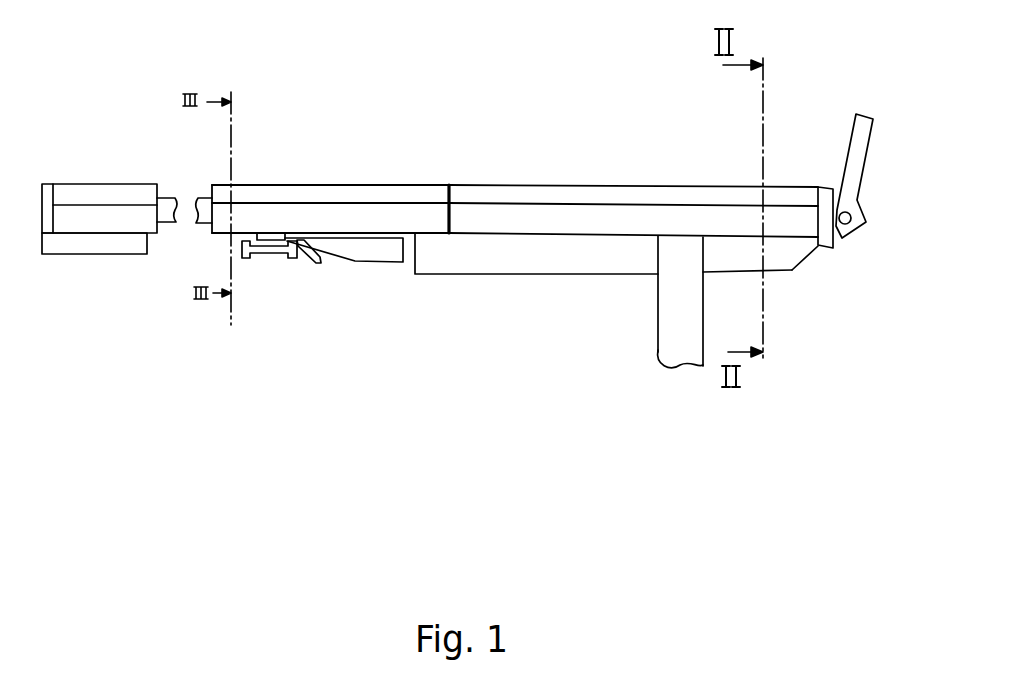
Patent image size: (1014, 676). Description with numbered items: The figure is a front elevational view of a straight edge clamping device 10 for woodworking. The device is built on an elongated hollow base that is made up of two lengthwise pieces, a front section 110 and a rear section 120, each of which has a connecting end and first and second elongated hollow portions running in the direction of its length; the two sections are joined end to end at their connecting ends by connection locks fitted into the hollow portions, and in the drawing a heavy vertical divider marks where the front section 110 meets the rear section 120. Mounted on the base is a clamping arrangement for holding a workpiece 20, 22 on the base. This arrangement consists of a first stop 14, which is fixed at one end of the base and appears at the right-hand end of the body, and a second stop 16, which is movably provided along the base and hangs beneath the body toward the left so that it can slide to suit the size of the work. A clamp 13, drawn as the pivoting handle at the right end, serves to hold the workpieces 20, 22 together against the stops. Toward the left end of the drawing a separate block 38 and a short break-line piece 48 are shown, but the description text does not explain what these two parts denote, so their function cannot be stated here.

The straight edge clamping device 10 is at (515, 135).
The front section 110 is at (333, 185).
The rear section 120 is at (572, 187).
The clamp 13 is at (858, 113).
The first stop 14 is at (800, 270).
The second stop 16 is at (345, 258).
The workpiece 20 is at (668, 348).
The workpiece 22 is at (500, 275).
The front block 38 is at (48, 184).
The connecting piece 48 is at (196, 223).